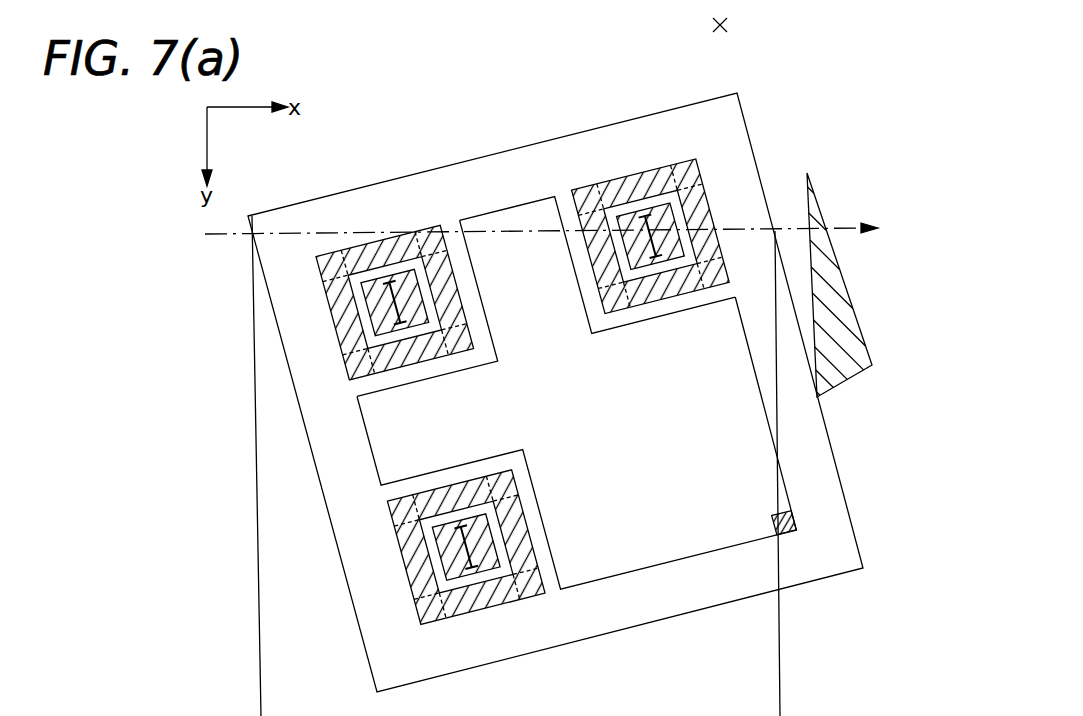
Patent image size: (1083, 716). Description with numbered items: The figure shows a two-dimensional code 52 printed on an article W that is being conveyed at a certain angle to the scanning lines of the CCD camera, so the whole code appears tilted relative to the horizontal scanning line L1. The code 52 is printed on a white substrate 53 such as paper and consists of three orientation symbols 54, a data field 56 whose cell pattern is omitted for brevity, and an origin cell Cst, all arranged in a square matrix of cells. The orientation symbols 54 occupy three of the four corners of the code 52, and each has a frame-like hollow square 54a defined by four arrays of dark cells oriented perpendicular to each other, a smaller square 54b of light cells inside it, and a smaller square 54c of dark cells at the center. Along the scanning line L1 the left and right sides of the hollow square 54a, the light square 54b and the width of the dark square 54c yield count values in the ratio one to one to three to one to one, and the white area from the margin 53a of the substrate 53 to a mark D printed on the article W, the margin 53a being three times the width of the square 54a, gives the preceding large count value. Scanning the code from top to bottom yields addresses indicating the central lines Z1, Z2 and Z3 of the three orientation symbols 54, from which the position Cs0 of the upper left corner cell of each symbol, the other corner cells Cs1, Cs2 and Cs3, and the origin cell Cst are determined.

The two-dimensional code 52 is at (498, 153).
The white substrate 53 is at (835, 523).
The margin 53a is at (757, 212).
The orientation symbol 54 is at (396, 196).
The frame-like hollow square 54a is at (666, 165).
The square of light cells 54b is at (633, 200).
The smaller square of dark cells 54c is at (626, 220).
The data field 56 is at (760, 478).
The origin cell Cst is at (797, 518).
The upper-left corner cell position Cs0 is at (320, 258).
The corner cell position Cs1 is at (346, 375).
The corner cell position Cs2 is at (465, 350).
The corner cell position Cs3 is at (445, 225).
The central line of orientation symbol Z1 is at (615, 272).
The central line of orientation symbol Z2 is at (430, 292).
The central line of orientation symbol Z3 is at (498, 533).
The scanning line L1 is at (525, 239).
The article W is at (727, 25).
The mark D is at (850, 288).